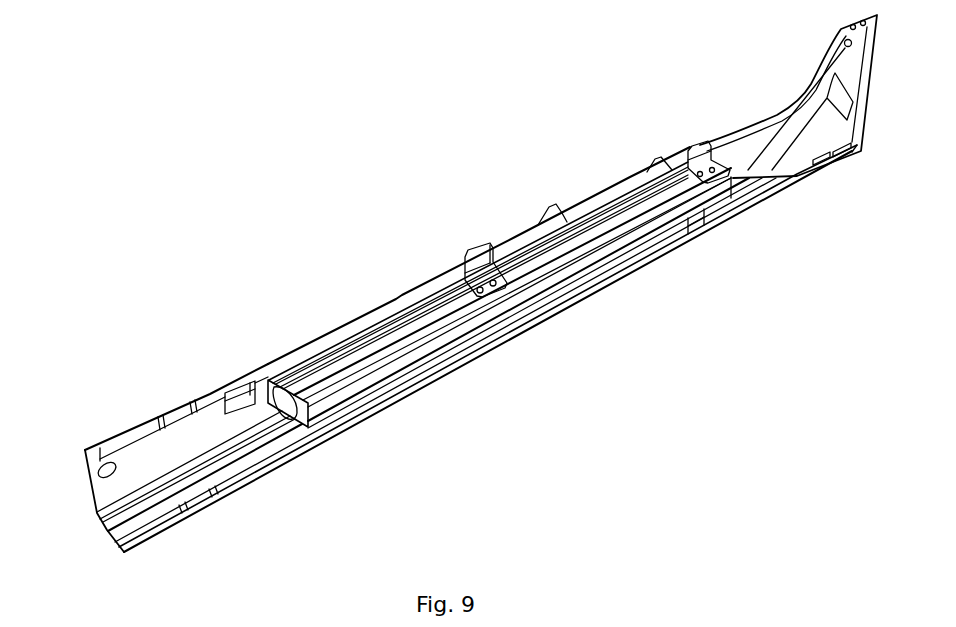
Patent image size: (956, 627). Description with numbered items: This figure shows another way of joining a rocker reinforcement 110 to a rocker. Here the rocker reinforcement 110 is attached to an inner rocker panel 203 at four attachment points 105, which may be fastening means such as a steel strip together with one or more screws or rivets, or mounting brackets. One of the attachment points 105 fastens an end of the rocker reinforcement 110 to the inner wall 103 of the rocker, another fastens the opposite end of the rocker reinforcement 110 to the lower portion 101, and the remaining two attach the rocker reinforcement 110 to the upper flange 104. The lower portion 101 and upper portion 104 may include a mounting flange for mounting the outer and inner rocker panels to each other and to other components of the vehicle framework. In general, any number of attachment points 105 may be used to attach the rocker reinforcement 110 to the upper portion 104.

The lower portion 101 is at (218, 479).
The inner wall 103 is at (157, 465).
The upper portion 104 is at (347, 327).
The attachment points 105 is at (240, 393).
The rocker reinforcement 110 is at (465, 333).
The inner rocker panel 203 is at (758, 125).